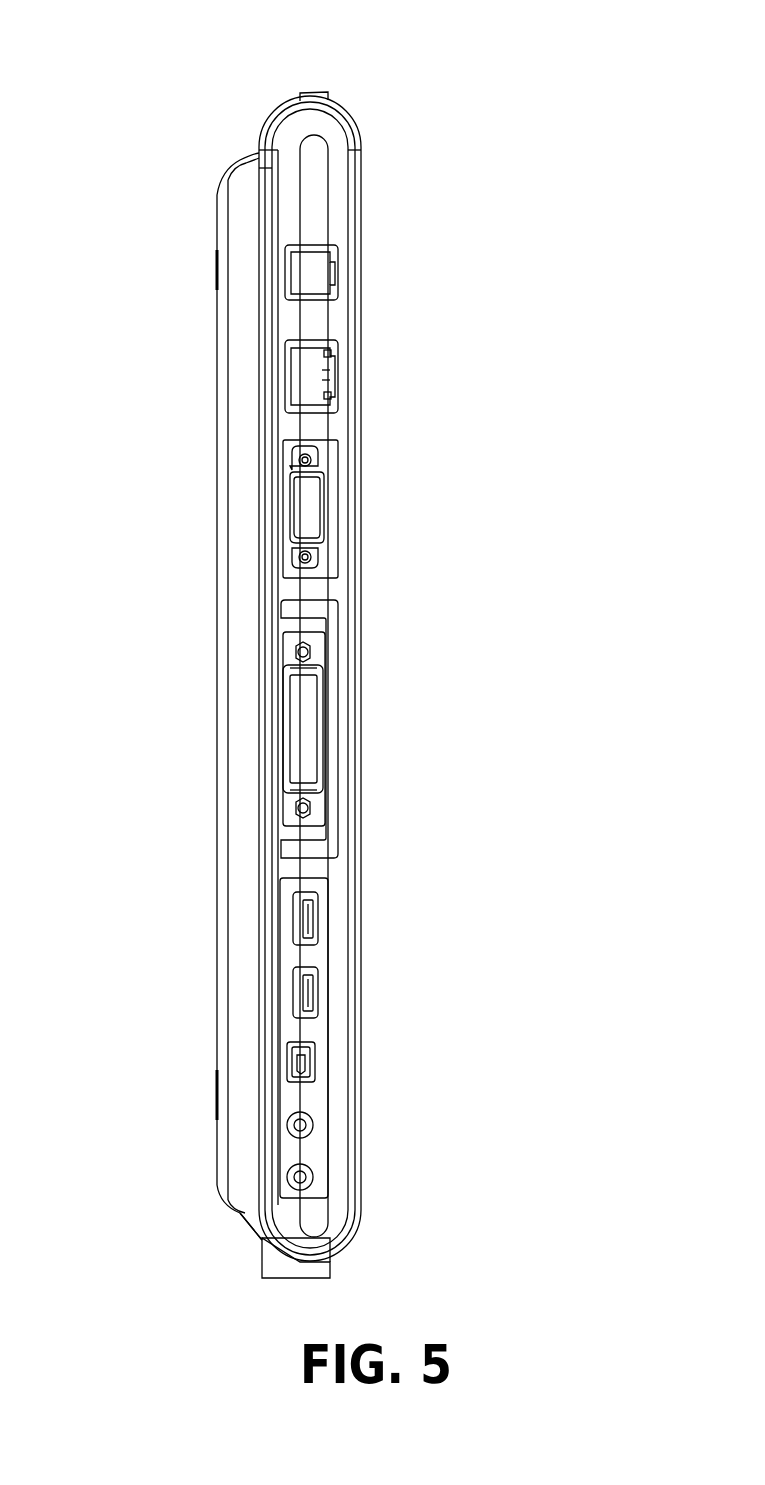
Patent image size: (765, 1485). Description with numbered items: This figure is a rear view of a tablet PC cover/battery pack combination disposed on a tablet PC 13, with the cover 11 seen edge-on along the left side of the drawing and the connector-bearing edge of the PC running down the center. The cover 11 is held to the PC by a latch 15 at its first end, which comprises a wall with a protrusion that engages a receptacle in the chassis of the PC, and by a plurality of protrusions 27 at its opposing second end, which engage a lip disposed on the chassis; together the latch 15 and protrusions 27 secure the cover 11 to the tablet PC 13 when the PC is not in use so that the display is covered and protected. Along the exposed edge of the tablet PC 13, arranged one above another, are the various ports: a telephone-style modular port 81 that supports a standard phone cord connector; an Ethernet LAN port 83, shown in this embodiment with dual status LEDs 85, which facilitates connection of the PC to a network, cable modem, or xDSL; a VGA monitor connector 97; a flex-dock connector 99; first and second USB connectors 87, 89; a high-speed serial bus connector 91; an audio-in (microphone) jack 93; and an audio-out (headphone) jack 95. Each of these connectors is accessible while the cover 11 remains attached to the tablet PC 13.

The cover 11 is at (217, 487).
The tablet PC 13 is at (358, 119).
The latch 15 is at (238, 1214).
The protrusions 27 is at (310, 100).
The RJ-11 port 81 is at (336, 273).
The RJ-45 Ethernet LAN port 83 is at (338, 376).
The dual status LEDs 85 is at (333, 351).
The first USB connector 87 is at (318, 918).
The second USB connector 89 is at (318, 995).
The IEEE 1394 connector 91 is at (313, 1068).
The audio-in (microphone) jack 93 is at (314, 1125).
The audio-out (headphone) jack 95 is at (314, 1178).
The VGA monitor connector 97 is at (325, 515).
The flex-dock connector 99 is at (318, 731).